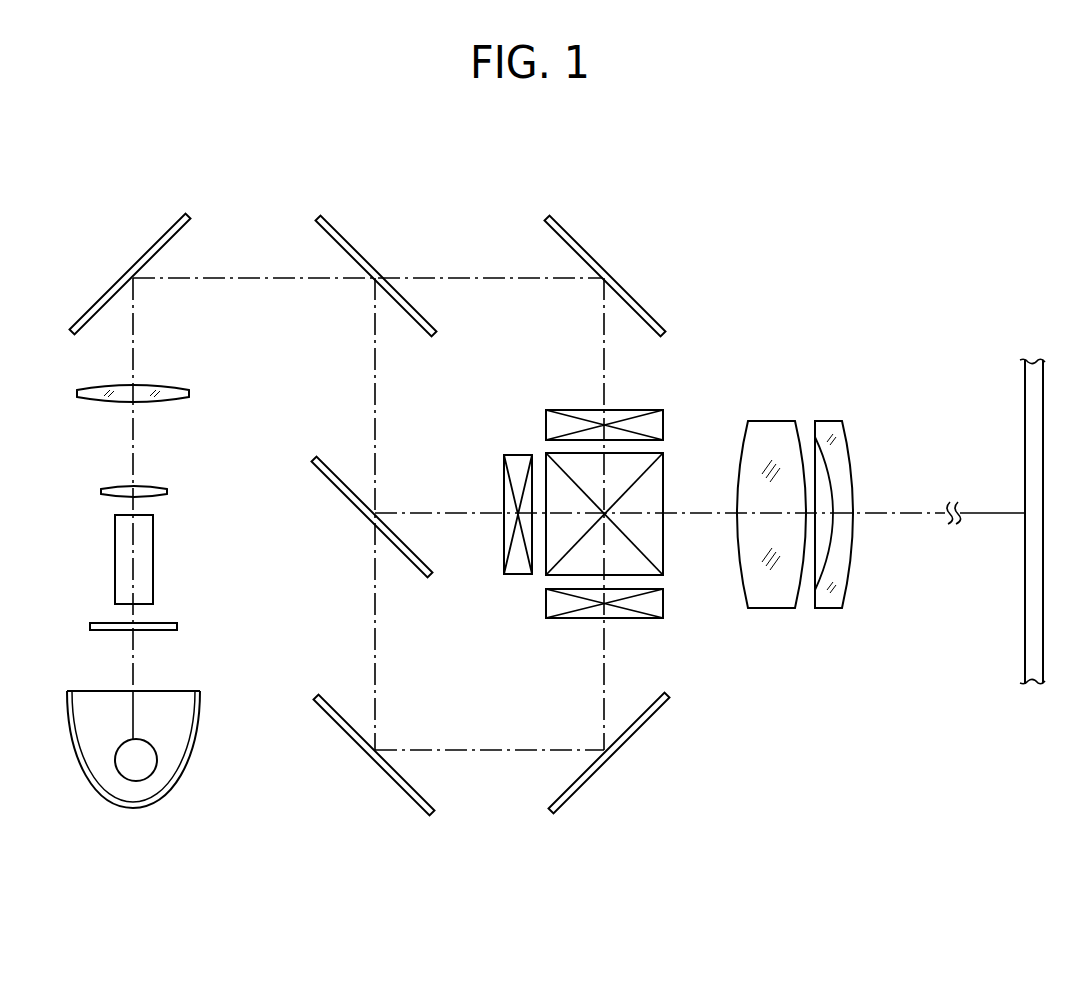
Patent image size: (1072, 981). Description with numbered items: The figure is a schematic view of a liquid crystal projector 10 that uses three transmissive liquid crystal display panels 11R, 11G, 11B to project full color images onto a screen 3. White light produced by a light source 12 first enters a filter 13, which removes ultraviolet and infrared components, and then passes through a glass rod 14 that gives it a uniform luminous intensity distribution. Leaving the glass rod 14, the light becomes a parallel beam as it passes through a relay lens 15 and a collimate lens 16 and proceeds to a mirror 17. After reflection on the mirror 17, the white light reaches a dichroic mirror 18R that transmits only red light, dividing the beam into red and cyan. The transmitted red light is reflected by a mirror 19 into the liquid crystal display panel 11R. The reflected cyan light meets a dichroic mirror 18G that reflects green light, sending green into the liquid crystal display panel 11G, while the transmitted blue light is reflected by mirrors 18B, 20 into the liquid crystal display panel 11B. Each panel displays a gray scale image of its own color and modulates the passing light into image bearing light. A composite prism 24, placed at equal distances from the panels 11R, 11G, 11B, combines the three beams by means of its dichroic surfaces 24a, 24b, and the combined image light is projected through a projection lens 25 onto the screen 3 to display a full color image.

The liquid crystal projector 10 is at (918, 211).
The screen 3 is at (1025, 382).
The light source 12 is at (210, 749).
The filter 13 is at (168, 623).
The glass rod 14 is at (153, 536).
The relay lens 15 is at (167, 491).
The collimate lens 16 is at (189, 393).
The mirror 17 is at (146, 248).
The dichroic mirror 18R is at (350, 247).
The dichroic mirror 18G is at (333, 485).
The mirror 18B is at (376, 762).
The mirror 19 is at (590, 247).
The mirror 20 is at (641, 730).
The liquid crystal display panel 11R is at (546, 418).
The liquid crystal display panel 11G is at (506, 455).
The liquid crystal display panel 11B is at (546, 605).
The composite prism 24 is at (645, 486).
The dichroic surface 24a is at (647, 472).
The dichroic surface 24b is at (647, 540).
The projection lens 25 is at (838, 414).